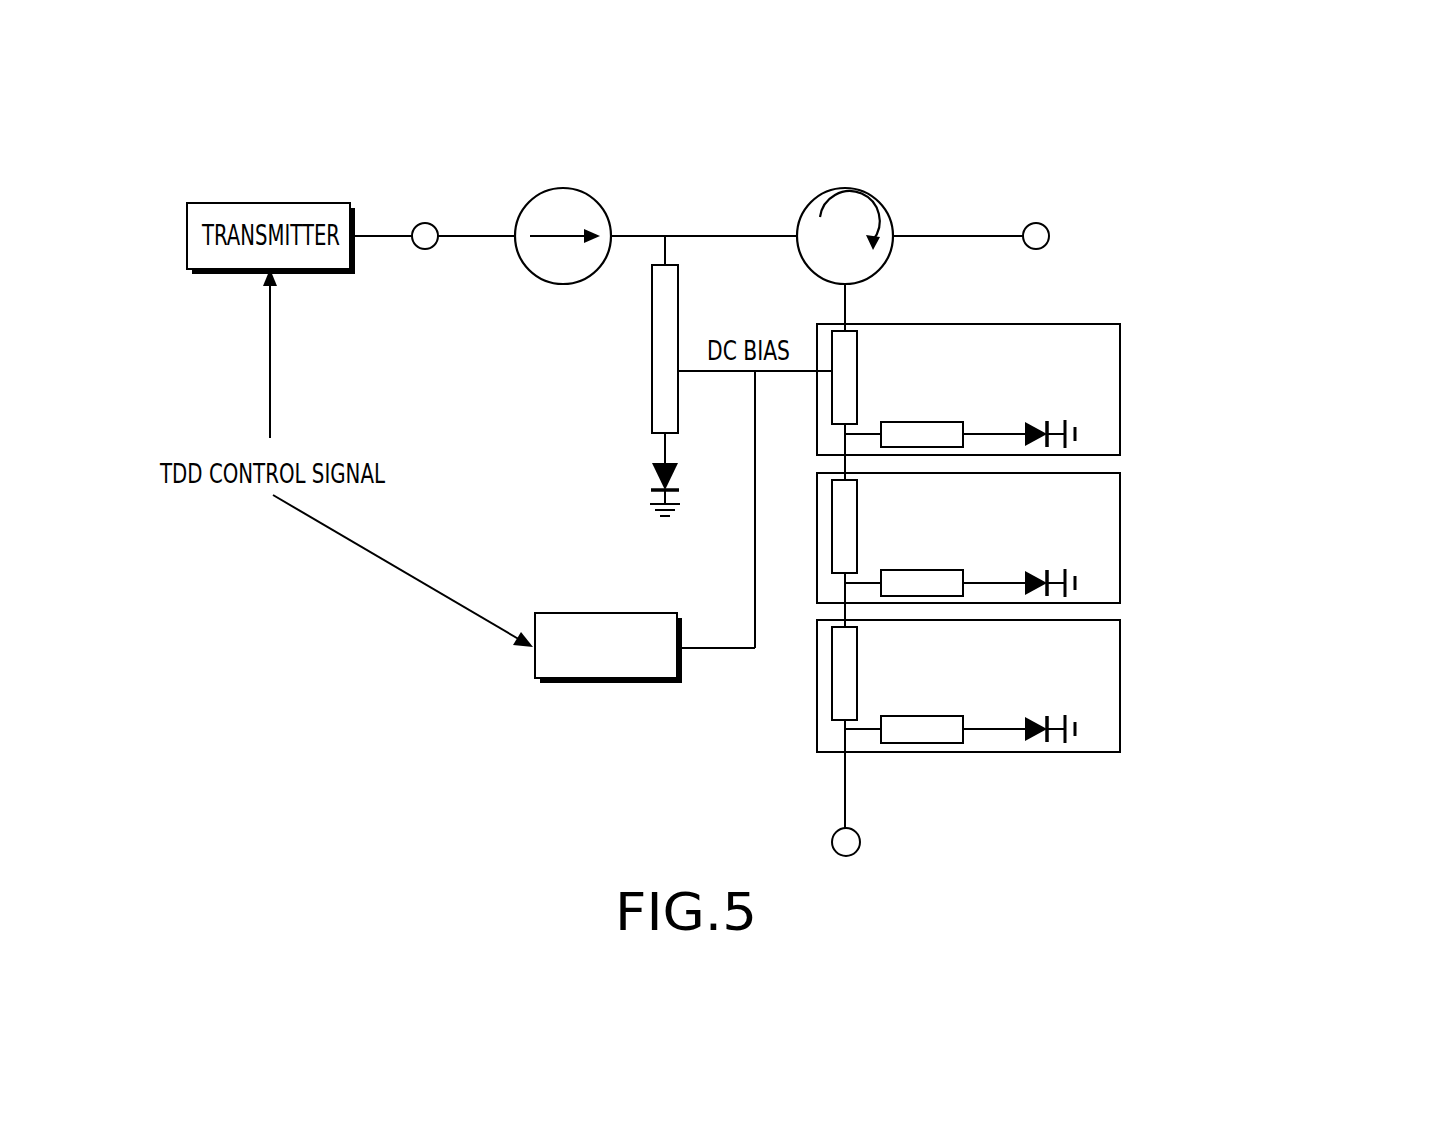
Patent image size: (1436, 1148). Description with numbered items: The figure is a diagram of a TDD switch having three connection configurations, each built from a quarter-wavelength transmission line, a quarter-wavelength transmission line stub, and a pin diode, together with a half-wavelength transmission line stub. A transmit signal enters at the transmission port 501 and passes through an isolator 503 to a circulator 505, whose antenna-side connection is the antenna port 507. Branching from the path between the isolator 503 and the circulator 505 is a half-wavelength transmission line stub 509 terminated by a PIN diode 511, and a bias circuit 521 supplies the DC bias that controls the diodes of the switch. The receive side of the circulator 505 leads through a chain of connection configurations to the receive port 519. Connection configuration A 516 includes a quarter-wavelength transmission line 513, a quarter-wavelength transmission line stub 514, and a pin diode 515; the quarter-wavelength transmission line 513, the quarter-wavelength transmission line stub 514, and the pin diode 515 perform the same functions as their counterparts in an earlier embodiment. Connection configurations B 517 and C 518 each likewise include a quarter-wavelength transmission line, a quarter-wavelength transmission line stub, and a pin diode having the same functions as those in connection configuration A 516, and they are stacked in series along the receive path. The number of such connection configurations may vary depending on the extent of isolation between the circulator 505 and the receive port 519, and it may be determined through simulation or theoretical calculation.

The transmission port 501 is at (424, 275).
The isolator 503 is at (566, 200).
The circulator 505 is at (847, 199).
The antenna port 507 is at (1087, 226).
The λ/2 transmission line stub 509 is at (587, 334).
The PIN diode 511 is at (605, 476).
The λ/4 transmission line 513 is at (940, 334).
The λ/4 transmission line stub 514 is at (940, 422).
The pin diode 515 is at (1085, 435).
The connection configuration A 516 is at (1101, 389).
The connection configuration B 517 is at (1120, 490).
The connection configuration C 518 is at (1120, 636).
The receive port 519 is at (897, 858).
The bias circuit 521 is at (608, 648).